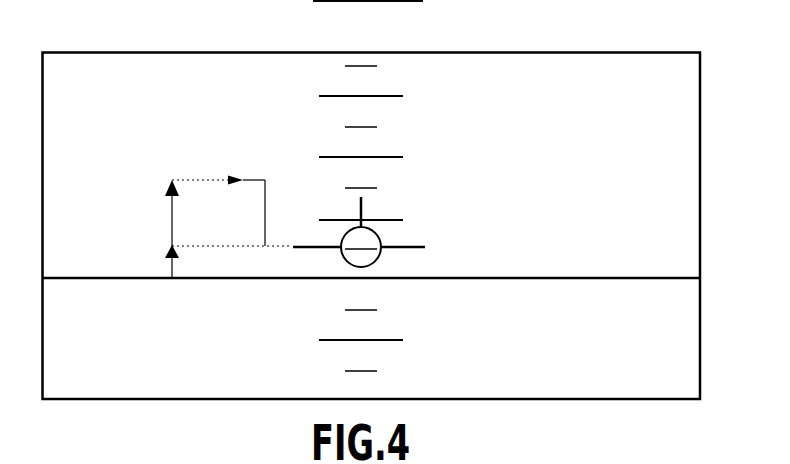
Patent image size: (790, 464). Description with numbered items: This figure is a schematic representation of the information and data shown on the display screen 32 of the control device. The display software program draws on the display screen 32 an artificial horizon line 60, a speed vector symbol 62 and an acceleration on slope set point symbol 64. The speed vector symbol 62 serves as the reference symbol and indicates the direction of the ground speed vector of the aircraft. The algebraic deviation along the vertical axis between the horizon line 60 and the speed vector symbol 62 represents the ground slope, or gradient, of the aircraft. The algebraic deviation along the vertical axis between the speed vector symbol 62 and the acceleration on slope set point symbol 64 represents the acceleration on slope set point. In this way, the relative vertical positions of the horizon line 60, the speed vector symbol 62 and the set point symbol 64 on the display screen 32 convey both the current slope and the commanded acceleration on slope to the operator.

The display screen 32 is at (618, 46).
The artificial horizon line 60 is at (545, 278).
The speed vector symbol 62 is at (403, 243).
The acceleration on slope set point symbol 64 is at (258, 162).